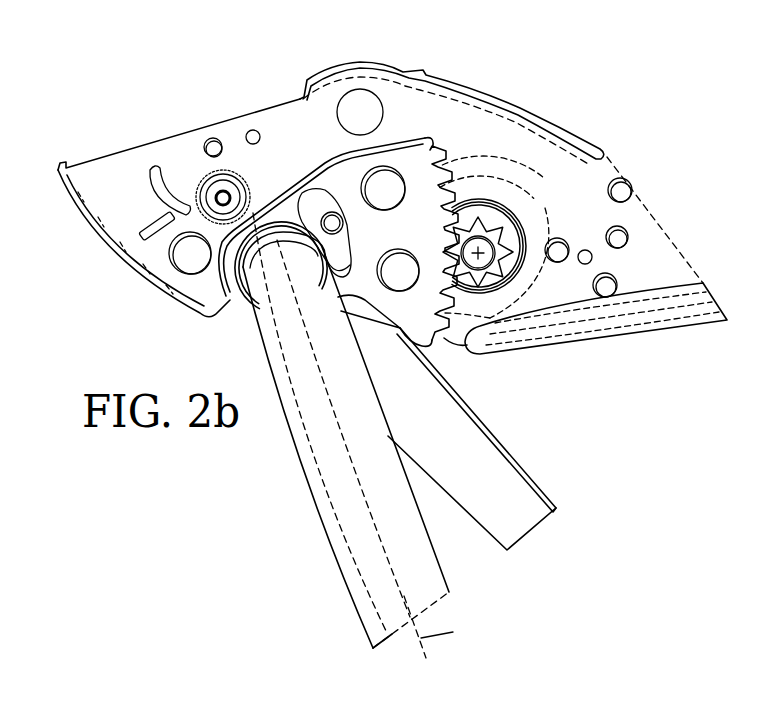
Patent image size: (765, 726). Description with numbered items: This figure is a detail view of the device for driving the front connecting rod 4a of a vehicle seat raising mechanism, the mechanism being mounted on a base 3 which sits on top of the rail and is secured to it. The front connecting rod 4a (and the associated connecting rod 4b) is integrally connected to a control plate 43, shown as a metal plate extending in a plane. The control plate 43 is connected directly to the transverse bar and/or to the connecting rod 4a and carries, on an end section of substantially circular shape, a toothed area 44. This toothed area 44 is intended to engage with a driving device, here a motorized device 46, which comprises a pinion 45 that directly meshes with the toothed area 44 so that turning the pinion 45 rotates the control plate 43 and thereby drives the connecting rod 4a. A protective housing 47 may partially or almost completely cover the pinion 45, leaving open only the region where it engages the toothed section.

The base 3 is at (650, 205).
The control plate 43 is at (361, 182).
The toothed area 44 is at (440, 178).
The pinion 45 is at (560, 186).
The motorized device 46 is at (537, 177).
The protective housing 47 is at (497, 222).
The front connecting rod 4a is at (508, 487).
The handle 4b is at (357, 435).